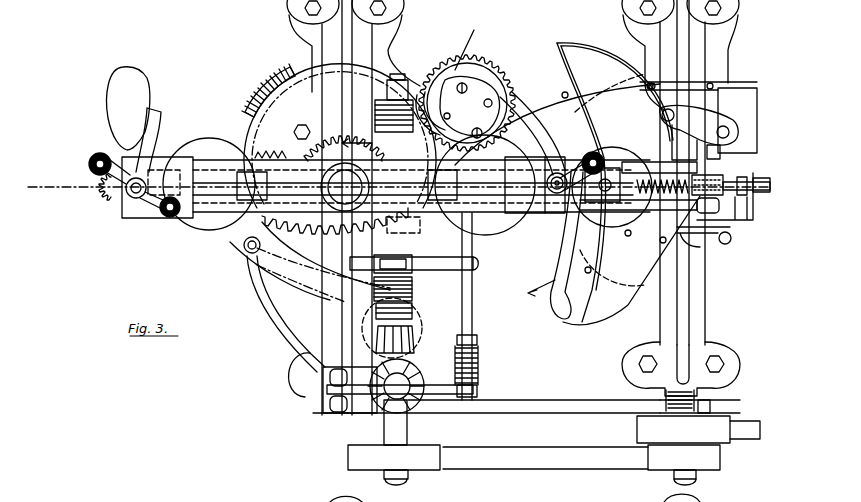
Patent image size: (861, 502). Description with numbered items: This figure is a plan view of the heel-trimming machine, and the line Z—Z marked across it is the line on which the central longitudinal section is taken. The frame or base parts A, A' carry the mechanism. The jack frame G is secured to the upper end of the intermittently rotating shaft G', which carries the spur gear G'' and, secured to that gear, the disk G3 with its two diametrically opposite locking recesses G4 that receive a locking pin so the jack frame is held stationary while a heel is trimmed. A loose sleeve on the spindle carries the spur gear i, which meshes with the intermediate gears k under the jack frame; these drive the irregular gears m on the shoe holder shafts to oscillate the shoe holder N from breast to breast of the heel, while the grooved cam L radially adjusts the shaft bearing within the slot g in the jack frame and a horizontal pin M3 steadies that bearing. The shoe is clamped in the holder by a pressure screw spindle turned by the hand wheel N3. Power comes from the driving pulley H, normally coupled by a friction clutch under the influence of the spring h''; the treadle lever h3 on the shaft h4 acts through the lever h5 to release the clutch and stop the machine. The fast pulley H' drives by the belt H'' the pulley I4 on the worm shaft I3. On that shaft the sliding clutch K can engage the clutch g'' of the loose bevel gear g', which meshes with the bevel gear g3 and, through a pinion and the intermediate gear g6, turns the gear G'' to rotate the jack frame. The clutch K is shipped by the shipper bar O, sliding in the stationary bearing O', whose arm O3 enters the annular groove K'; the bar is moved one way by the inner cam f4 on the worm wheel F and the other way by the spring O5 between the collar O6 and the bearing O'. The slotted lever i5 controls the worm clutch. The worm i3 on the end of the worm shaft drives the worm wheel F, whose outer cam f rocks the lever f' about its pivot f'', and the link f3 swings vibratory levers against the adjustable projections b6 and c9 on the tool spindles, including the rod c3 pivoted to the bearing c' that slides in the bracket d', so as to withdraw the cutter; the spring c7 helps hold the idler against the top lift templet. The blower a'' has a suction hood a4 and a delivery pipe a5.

The section line Z— Z is at (400, 187).
The frame or base part A is at (353, 207).
The frame or base part A' is at (684, 198).
The treadle shaft h4 is at (520, 400).
The spring h'' is at (646, 397).
The clutch lever h5 is at (712, 406).
The driving pulley H is at (698, 429).
The pulley H' is at (684, 465).
The belt H'' is at (545, 458).
The pulley I4 is at (394, 465).
The disk G3 is at (338, 149).
The spur gear G'' is at (260, 90).
The intermediate gear k is at (283, 156).
The grooved cam L is at (407, 185).
The jack frame G is at (421, 186).
The jack frame shaft G' is at (345, 187).
The spur gear i is at (344, 182).
The slotted lever i5 is at (428, 232).
The horizontal pin M3 is at (498, 190).
The slot g is at (157, 187).
The irregular gear m is at (103, 200).
The shoe holder N is at (160, 130).
The hand wheel N3 is at (90, 163).
The locking recess G4 is at (243, 250).
The treadle lever h3 is at (252, 310).
The intermediate gear g6 is at (285, 354).
The worm i3 is at (372, 115).
The worm shaft I3 is at (405, 78).
The worm wheel F is at (490, 62).
The inner cam f4 is at (469, 107).
The outer cam f is at (445, 82).
The lever f' is at (532, 133).
The pivot f'' is at (557, 166).
The blower a'' is at (555, 239).
The bearing c' is at (599, 201).
The bracket d' is at (577, 184).
The hood a4 is at (679, 132).
The delivery pipe a5 is at (698, 117).
The spring c7 is at (638, 185).
The adjustable projection b6 is at (722, 215).
The rod or spindle c3 is at (772, 180).
The adjustable projection c9 is at (760, 207).
The link f3 is at (733, 240).
The annular groove K' is at (382, 263).
The arm O3 is at (470, 276).
The sliding clutch K is at (407, 289).
The clutch g'' is at (402, 328).
The bevel gear g' is at (408, 339).
The bevel gear g3 is at (424, 372).
The stationary bearing O' is at (412, 390).
The shipper bar O is at (480, 306).
The collar O6 is at (478, 340).
The spring O5 is at (479, 362).